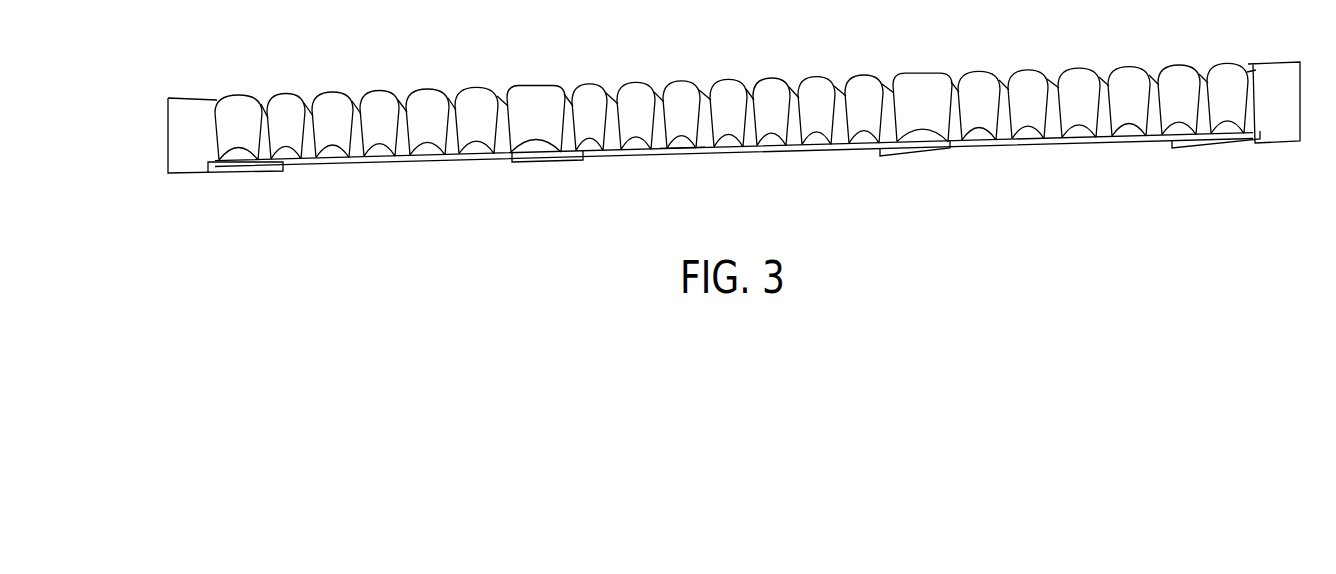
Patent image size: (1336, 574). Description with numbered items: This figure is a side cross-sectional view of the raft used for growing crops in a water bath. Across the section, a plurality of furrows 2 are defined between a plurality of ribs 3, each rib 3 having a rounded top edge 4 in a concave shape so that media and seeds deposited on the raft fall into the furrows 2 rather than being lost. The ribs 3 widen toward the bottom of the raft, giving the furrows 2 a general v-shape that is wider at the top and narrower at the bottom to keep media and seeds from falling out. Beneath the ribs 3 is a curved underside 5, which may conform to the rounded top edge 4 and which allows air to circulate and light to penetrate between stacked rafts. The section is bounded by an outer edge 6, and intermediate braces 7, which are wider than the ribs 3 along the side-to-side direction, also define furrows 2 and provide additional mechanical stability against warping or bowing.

The furrow 2 is at (608, 92).
The rib 3 is at (687, 92).
The rounded top edge 4 is at (730, 87).
The curved underside 5 is at (679, 140).
The outer edge 6 is at (193, 108).
The intermediate brace 7 is at (538, 93).